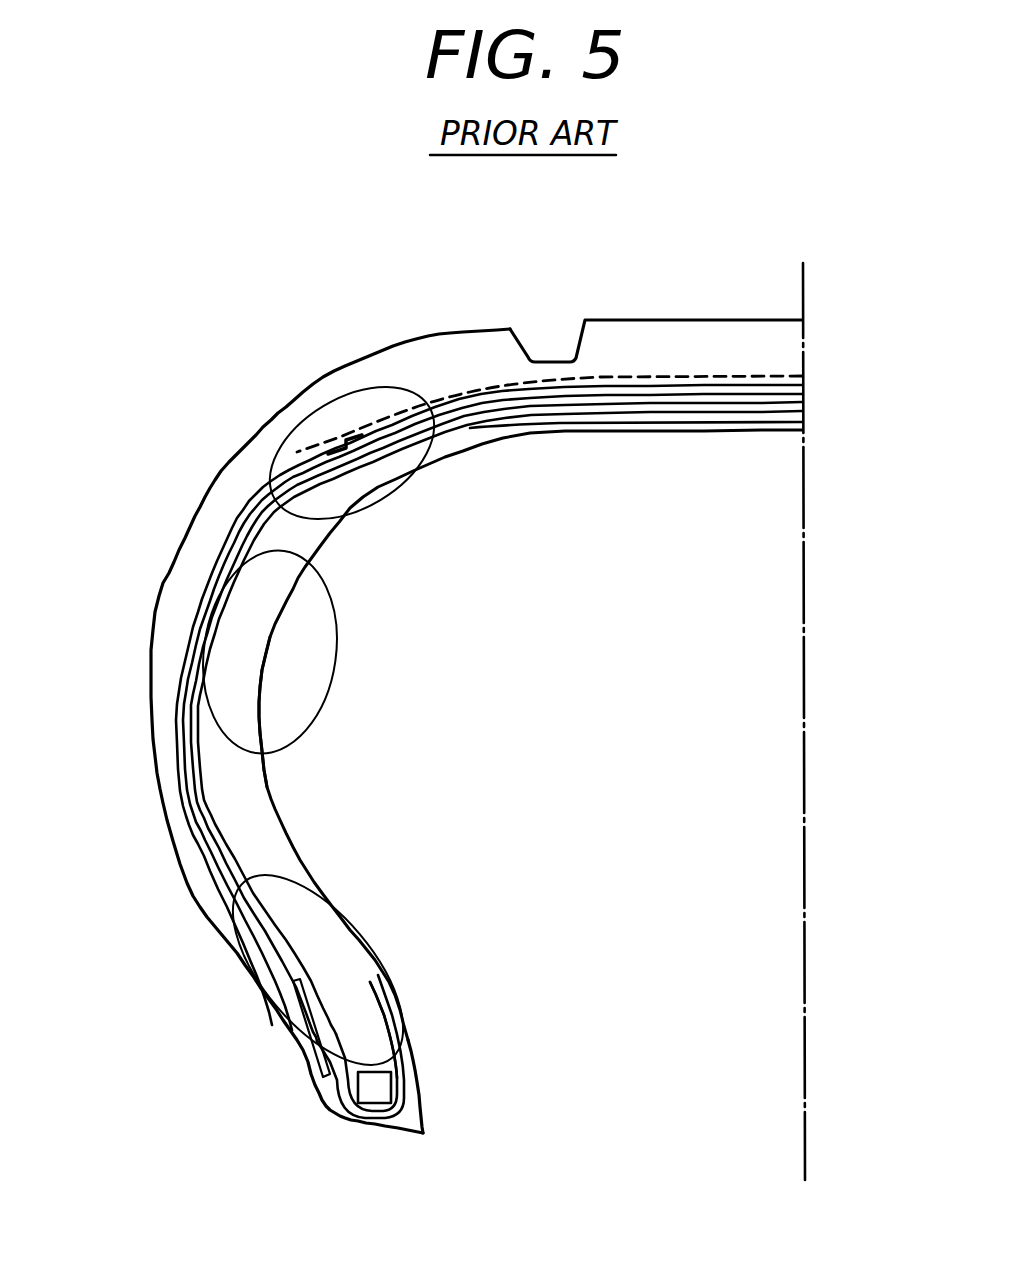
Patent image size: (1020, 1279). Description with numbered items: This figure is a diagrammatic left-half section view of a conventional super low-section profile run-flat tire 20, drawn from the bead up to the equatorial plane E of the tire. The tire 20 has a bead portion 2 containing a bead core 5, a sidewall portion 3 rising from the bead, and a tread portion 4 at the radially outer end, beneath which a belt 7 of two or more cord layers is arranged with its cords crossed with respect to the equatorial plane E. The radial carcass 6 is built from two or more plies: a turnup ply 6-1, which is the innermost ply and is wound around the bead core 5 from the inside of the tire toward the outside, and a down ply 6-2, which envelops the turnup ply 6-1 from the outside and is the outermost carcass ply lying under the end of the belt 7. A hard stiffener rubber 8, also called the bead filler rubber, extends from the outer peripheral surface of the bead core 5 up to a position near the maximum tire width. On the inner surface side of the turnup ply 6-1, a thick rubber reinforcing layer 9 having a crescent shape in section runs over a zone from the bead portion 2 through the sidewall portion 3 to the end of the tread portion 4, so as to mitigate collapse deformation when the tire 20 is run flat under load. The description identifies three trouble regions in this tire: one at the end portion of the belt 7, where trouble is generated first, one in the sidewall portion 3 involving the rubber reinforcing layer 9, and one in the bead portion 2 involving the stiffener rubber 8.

The run-flat tire 20 is at (344, 352).
The bead portion 2 is at (329, 1086).
The sidewall portion 3 is at (148, 786).
The tread portion 4 is at (712, 320).
The bead core 5 is at (386, 1086).
The radial carcass 6 is at (457, 751).
The turnup ply 6-1 is at (320, 883).
The down ply 6-2 is at (227, 900).
The belt 7 is at (642, 377).
The stiffener rubber 8 is at (317, 970).
The rubber reinforcing layer 9 is at (243, 793).
The equatorial plane E is at (806, 293).